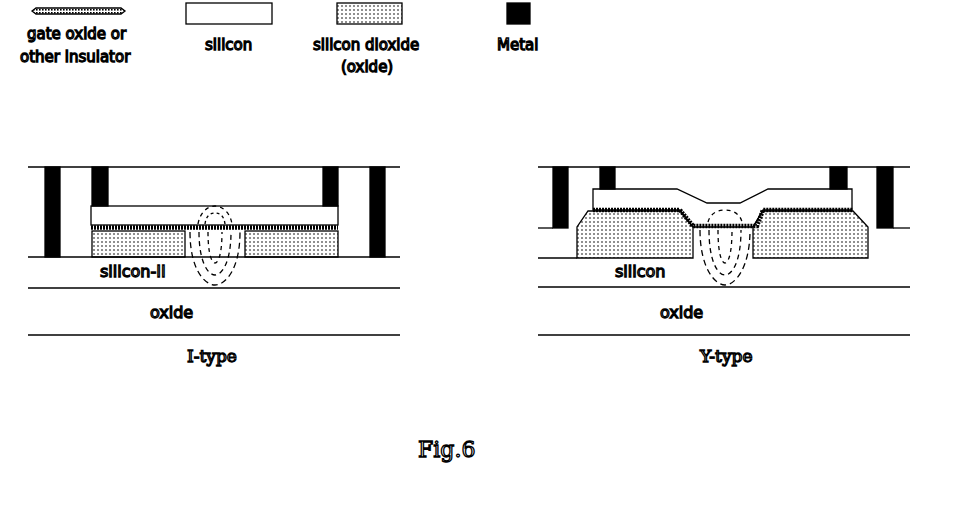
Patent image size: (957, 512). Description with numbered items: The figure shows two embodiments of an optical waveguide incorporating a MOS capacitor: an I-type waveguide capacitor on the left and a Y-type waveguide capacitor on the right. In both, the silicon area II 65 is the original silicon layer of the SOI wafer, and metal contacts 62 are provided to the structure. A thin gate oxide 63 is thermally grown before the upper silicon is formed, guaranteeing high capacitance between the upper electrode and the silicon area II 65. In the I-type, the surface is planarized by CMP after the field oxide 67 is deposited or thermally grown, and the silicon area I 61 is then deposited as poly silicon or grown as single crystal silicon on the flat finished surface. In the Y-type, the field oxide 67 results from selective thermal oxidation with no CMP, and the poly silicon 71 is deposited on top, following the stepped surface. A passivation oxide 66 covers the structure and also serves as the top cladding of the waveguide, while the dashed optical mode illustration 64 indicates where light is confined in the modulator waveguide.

The silicon area I 61 is at (187, 213).
The metal contact 62 is at (43, 166).
The gate oxide 63 is at (590, 210).
The optical mode illustration 64 is at (222, 242).
The silicon area II 65 is at (308, 270).
The passivation oxide 66 is at (310, 180).
The field oxide 67 is at (310, 235).
The poly silicon 71 is at (702, 212).